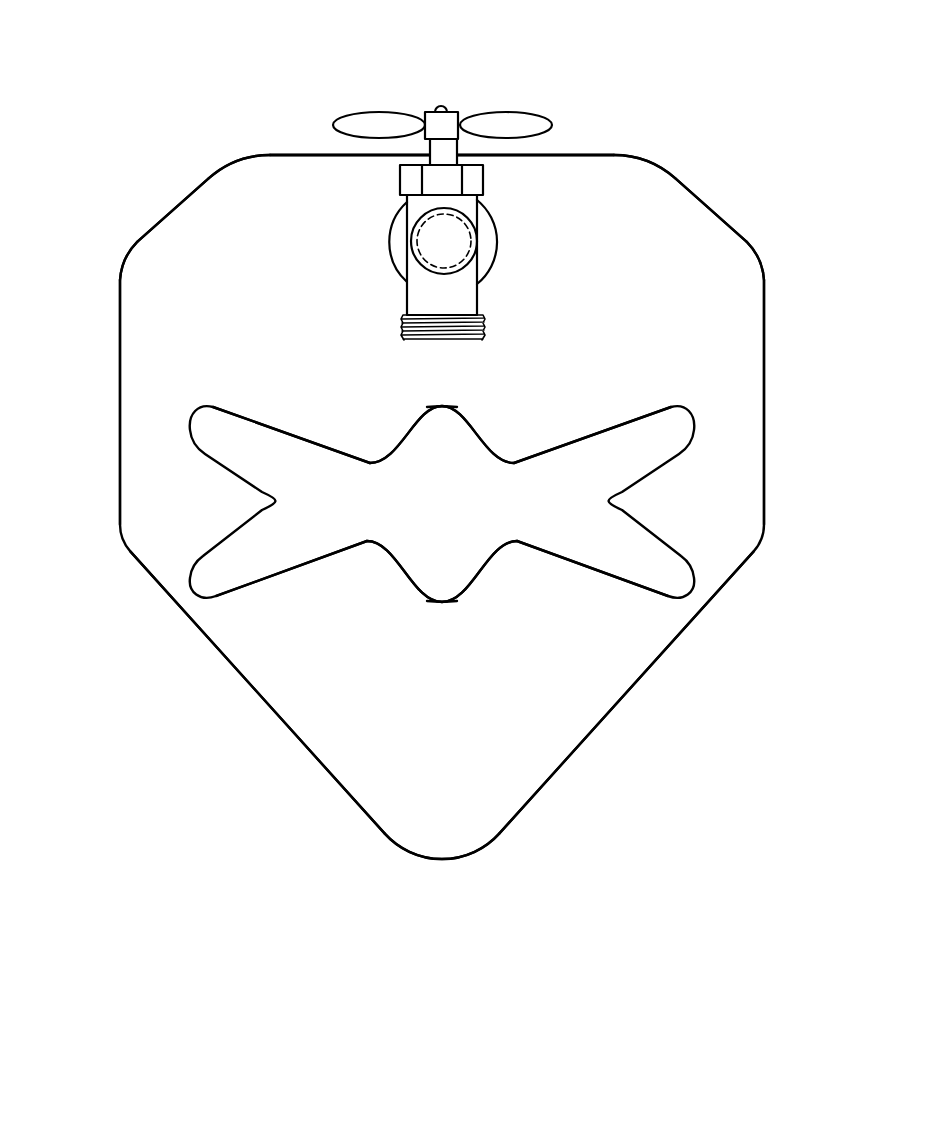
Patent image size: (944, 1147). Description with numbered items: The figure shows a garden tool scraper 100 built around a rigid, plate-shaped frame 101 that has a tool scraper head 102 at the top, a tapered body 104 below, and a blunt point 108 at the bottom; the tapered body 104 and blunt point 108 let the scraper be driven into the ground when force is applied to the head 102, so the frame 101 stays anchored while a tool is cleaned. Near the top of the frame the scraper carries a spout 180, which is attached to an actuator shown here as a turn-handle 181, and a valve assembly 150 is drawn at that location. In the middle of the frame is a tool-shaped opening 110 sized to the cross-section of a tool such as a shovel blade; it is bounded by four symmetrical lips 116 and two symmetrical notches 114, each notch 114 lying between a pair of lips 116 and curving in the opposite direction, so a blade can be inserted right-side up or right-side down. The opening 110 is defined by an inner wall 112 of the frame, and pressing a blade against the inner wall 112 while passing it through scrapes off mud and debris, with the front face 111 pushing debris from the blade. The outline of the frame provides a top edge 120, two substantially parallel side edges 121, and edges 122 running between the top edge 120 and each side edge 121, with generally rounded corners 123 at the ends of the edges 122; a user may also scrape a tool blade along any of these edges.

The garden tool scraper 100 is at (252, 107).
The frame 101 is at (780, 330).
The tool scraper head 102 is at (612, 178).
The tapered body 104 is at (218, 640).
The blunt point 108 is at (441, 860).
The tool-shaped opening 110 is at (686, 399).
The front face 111 is at (423, 735).
The inner wall 112 is at (376, 480).
The notch 114 is at (442, 406).
The lip 116 is at (328, 452).
The top edge 120 is at (583, 155).
The parallel side edge 121 is at (120, 440).
The edge 122 is at (165, 217).
The corner 123 is at (210, 159).
The valve 150 is at (393, 286).
The spout 180 is at (472, 302).
The turn-handle 181 is at (377, 120).